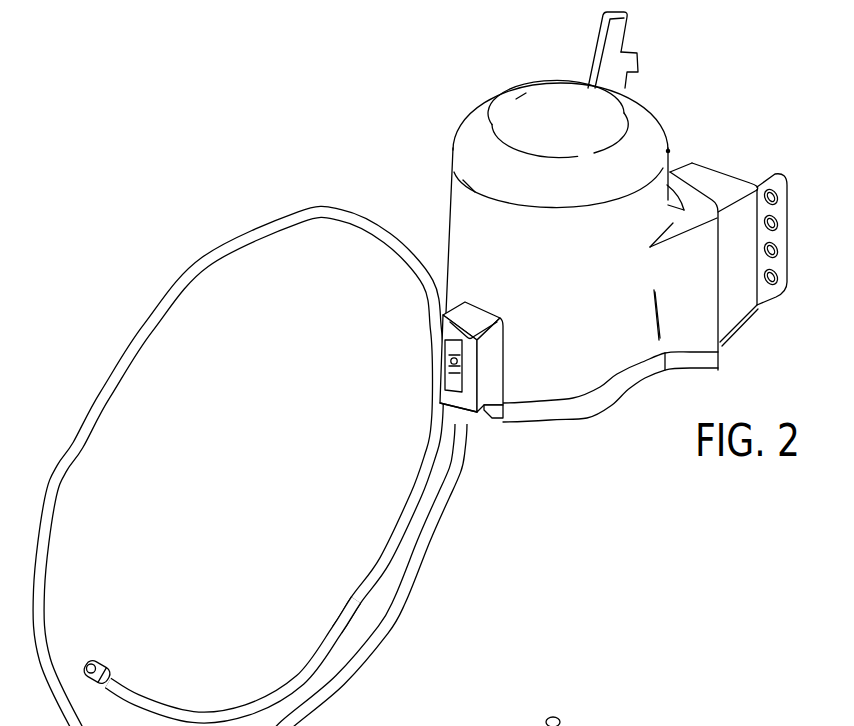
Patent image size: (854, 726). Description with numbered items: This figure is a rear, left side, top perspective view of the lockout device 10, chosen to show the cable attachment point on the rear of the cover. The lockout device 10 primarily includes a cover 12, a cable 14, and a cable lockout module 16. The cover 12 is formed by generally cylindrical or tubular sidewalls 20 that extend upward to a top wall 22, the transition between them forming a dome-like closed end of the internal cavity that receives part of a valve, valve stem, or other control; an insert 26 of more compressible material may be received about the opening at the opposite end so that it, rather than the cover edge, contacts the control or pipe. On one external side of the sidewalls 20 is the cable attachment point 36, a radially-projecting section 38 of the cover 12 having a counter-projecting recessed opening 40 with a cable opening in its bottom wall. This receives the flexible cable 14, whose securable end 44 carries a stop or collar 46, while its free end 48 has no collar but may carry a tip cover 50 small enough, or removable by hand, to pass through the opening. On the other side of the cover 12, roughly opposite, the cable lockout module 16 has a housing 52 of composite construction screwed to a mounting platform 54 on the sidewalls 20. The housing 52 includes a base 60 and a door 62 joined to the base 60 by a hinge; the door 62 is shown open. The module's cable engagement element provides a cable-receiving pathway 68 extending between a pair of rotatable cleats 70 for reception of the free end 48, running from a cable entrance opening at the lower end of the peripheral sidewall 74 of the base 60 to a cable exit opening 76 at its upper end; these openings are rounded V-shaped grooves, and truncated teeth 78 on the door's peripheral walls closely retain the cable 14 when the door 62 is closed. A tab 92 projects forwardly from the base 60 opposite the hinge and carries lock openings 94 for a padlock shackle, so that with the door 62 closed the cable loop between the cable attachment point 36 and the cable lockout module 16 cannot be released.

The lockout device 10 is at (710, 76).
The cover 12 is at (489, 222).
The cable 14 is at (397, 614).
The cable lockout module 16 is at (740, 335).
The sidewalls 20 is at (592, 372).
The top wall 22 is at (553, 108).
The insert 26 is at (616, 388).
The cable attachment point 36 is at (483, 432).
The radially-projecting section 38 is at (490, 367).
The recessed opening 40 is at (451, 352).
The securable end 44 is at (436, 408).
The collar 46 is at (448, 370).
The free end 48 is at (126, 664).
The tip cover 50 is at (87, 660).
The housing 52 is at (736, 160).
The mounting platform 54 is at (696, 316).
The base 60 is at (757, 313).
The door 62 is at (617, 43).
The cable-receiving pathway 68 is at (610, 725).
The rotatable cleats 70 is at (586, 723).
The peripheral sidewall 74 is at (700, 177).
The cable exit opening 76 is at (690, 165).
The truncated teeth 78 is at (632, 63).
The tab 92 is at (782, 209).
The lock openings 94 is at (786, 273).